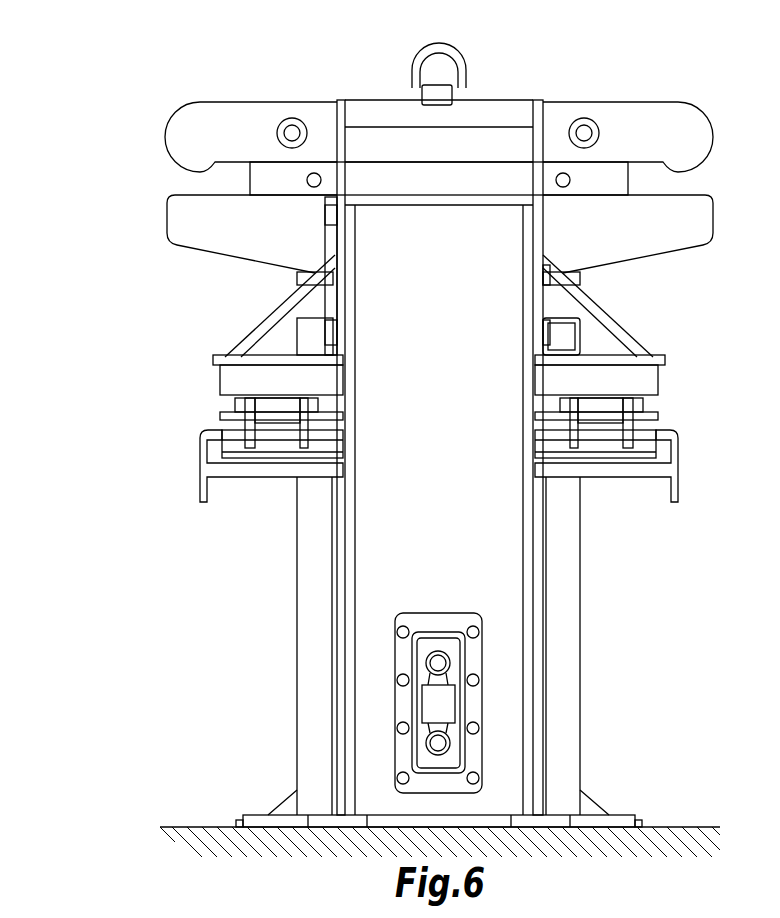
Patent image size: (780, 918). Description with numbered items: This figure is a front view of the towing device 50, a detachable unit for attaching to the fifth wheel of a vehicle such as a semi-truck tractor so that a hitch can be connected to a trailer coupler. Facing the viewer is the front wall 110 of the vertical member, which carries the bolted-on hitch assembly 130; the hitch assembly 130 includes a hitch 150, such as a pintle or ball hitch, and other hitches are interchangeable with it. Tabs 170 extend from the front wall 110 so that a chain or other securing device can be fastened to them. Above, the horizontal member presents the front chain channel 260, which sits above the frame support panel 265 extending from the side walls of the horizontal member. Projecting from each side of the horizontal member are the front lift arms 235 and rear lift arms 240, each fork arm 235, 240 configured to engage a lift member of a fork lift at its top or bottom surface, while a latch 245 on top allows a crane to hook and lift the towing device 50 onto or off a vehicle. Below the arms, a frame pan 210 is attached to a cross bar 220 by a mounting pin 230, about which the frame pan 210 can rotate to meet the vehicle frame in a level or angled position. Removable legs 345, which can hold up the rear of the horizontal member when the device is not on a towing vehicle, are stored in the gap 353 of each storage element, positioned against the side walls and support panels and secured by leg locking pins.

The towing device 50 is at (517, 87).
The front wall 110 is at (460, 402).
The hitch assembly 130 is at (467, 705).
The hitch 150 is at (438, 662).
The tab 170 is at (260, 815).
The frame pan 210 is at (612, 478).
The cross bar 220 is at (297, 390).
The mounting pin 230 is at (236, 406).
The front lift arm 235 is at (176, 222).
The rear lift arm 240 is at (176, 135).
The latch 245 is at (412, 76).
The front chain channel 260 is at (453, 192).
The frame support panel 265 is at (656, 355).
The leg 345 is at (298, 690).
The gap 353 is at (308, 318).